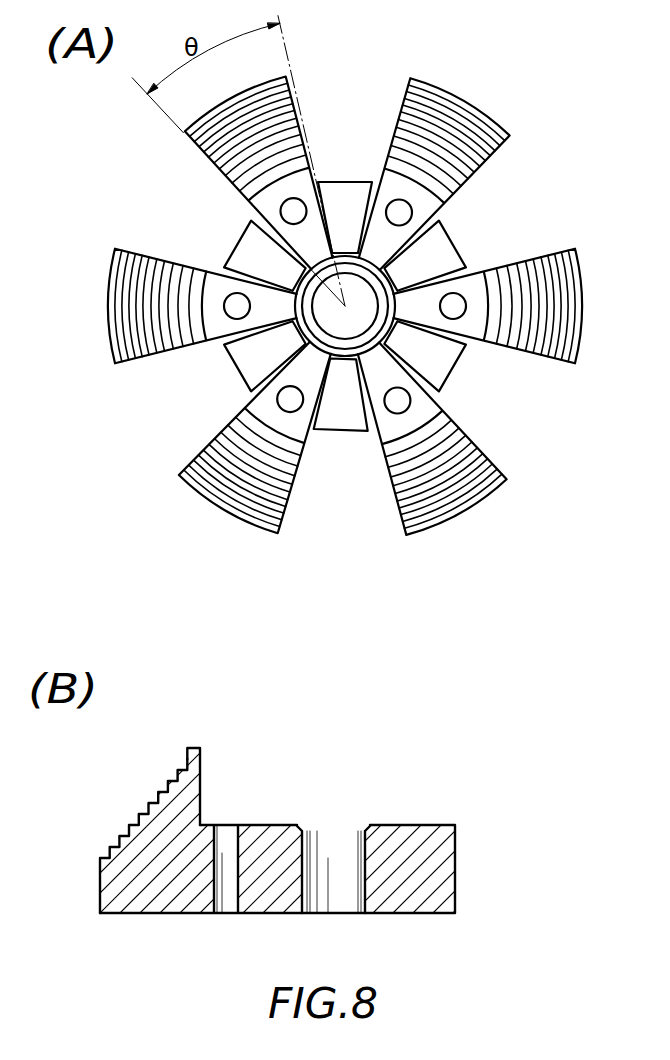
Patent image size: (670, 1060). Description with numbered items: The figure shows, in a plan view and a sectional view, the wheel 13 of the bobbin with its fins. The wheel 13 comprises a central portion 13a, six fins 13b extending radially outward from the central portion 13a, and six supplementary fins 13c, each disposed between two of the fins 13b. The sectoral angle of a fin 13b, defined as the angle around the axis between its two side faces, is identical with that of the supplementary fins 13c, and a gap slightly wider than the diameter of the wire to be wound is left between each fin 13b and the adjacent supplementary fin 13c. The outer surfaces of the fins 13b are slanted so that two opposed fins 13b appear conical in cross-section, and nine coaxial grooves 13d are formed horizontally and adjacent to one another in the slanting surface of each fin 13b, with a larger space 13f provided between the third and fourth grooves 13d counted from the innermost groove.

The wheel 13 is at (567, 167).
The central portion 13a is at (385, 282).
The fin 13b is at (480, 110).
The supplementary fin 13c is at (442, 362).
The coaxial groove 13d is at (538, 326).
The larger space 13f is at (162, 800).